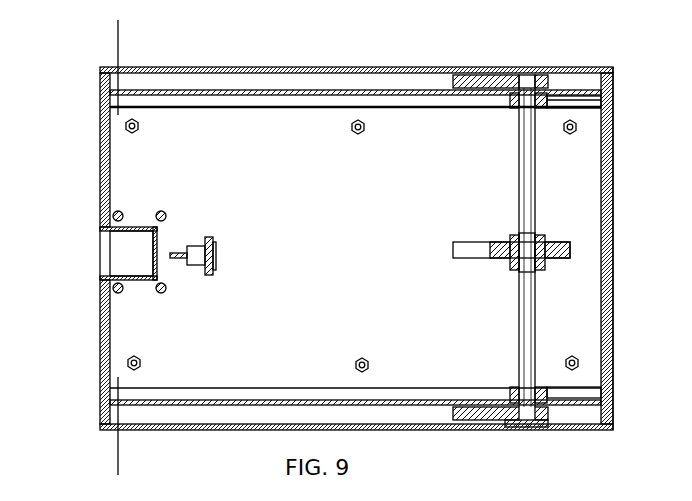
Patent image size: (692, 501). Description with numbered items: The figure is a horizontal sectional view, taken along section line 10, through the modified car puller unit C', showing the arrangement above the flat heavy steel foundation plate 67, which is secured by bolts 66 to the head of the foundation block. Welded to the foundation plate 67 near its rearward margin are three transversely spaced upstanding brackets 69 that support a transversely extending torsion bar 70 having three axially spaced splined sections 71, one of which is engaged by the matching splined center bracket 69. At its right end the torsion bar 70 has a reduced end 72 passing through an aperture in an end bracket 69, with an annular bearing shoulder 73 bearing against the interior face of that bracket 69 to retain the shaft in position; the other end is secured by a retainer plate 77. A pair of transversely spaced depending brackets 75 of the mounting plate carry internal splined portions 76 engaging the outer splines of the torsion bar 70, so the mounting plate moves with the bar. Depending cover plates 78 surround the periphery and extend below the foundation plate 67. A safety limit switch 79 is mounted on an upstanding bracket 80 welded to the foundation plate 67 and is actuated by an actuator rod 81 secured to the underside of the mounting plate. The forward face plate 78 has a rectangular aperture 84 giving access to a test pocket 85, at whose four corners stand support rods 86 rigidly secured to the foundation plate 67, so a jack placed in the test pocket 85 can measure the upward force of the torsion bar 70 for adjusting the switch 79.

The section line 10- 10 is at (117, 34).
The bolts 66 is at (366, 128).
The foundation plate 67 is at (585, 334).
The upstanding brackets 69 is at (490, 94).
The torsion bar 70 is at (519, 165).
The splined sections 71 is at (546, 76).
The reduced end 72 is at (528, 75).
The annular bearing shoulder 73 is at (509, 77).
The depending brackets 75 is at (275, 97).
The splined portions 76 is at (613, 102).
The retainer plate 77 is at (524, 428).
The cover plates 78 is at (352, 67).
The safety limit switch 79 is at (197, 246).
The upstanding bracket 80 is at (215, 263).
The actuator rod 81 is at (178, 252).
The rectangular aperture 84 is at (100, 240).
The test pocket 85 is at (105, 258).
The support rods 86 is at (122, 212).
The car puller unit C' is at (643, 248).